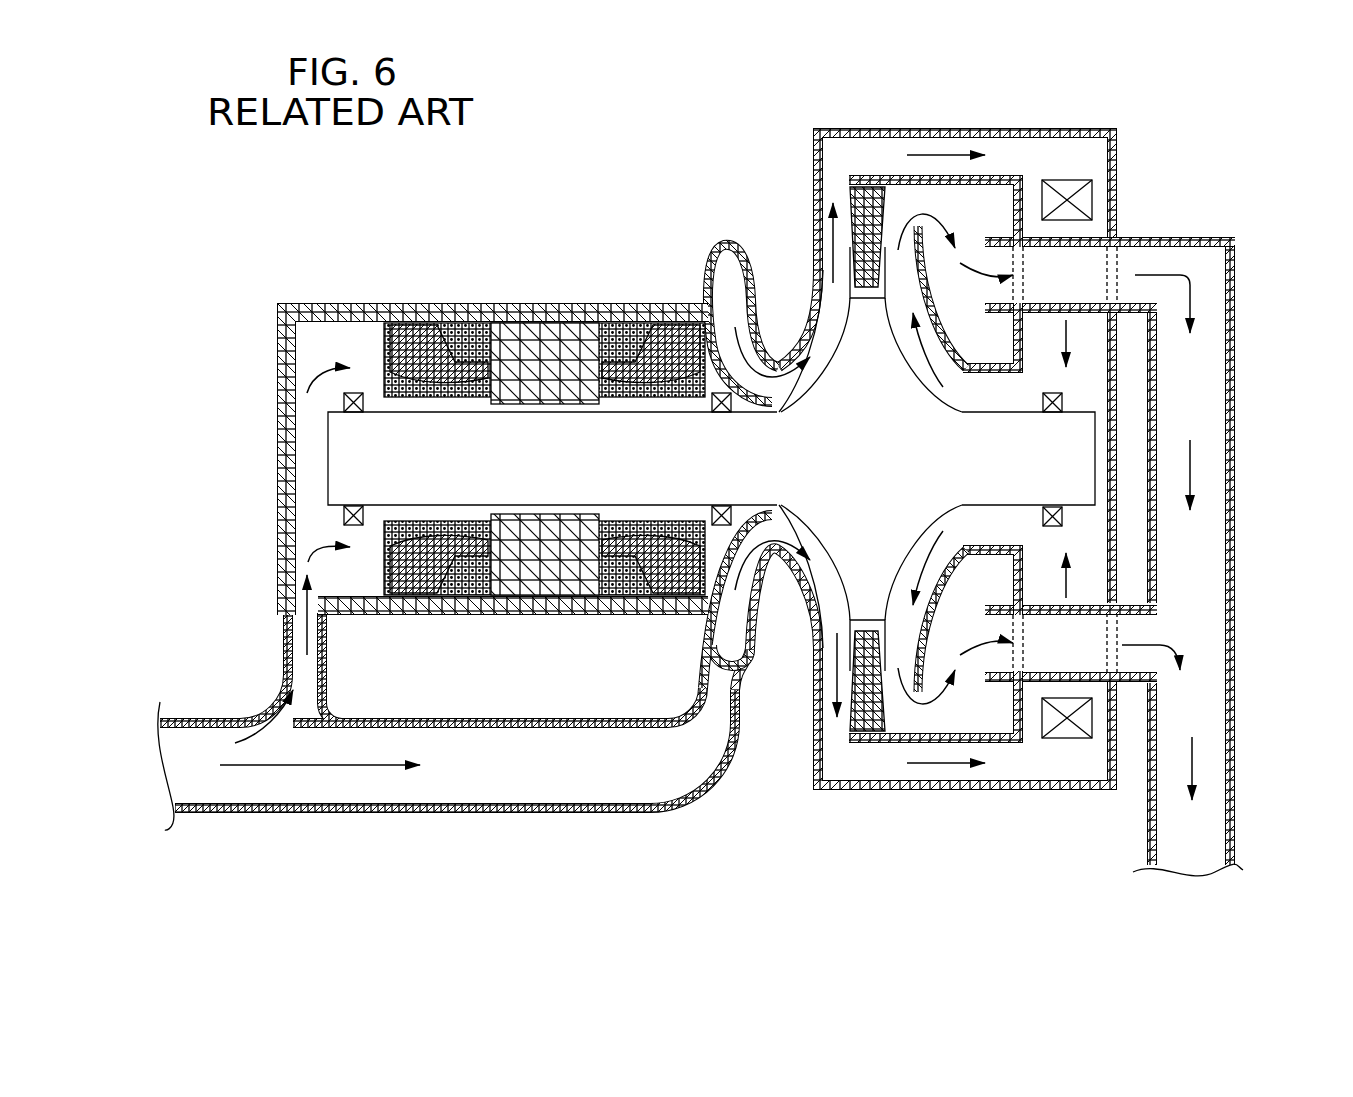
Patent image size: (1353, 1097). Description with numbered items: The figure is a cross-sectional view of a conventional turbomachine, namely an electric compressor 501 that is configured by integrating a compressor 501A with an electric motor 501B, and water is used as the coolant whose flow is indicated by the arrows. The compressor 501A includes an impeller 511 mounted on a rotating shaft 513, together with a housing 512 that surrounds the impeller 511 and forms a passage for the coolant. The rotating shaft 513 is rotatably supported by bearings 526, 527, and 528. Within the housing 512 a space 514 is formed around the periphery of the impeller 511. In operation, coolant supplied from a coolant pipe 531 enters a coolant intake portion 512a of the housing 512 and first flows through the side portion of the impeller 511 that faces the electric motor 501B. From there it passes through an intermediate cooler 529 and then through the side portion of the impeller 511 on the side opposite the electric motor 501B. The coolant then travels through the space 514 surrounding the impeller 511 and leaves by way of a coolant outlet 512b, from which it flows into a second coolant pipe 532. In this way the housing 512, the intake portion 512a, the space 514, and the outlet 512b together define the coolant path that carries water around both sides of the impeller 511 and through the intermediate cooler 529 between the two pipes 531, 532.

The electric compressor 501 is at (737, 133).
The compressor 501A is at (805, 212).
The electric motor 501B is at (543, 300).
The impeller 511 is at (843, 315).
The housing 512 is at (978, 128).
The coolant intake portion 512a is at (710, 627).
The coolant outlet 512b is at (1128, 236).
The rotating shaft 513 is at (1000, 410).
The space 514 is at (963, 708).
The bearing 526 is at (343, 402).
The bearing 527 is at (680, 322).
The bearing 528 is at (1063, 400).
The intermediate cooler 529 is at (1075, 182).
The coolant pipe 531 is at (473, 814).
The coolant pipe 532 is at (1237, 782).